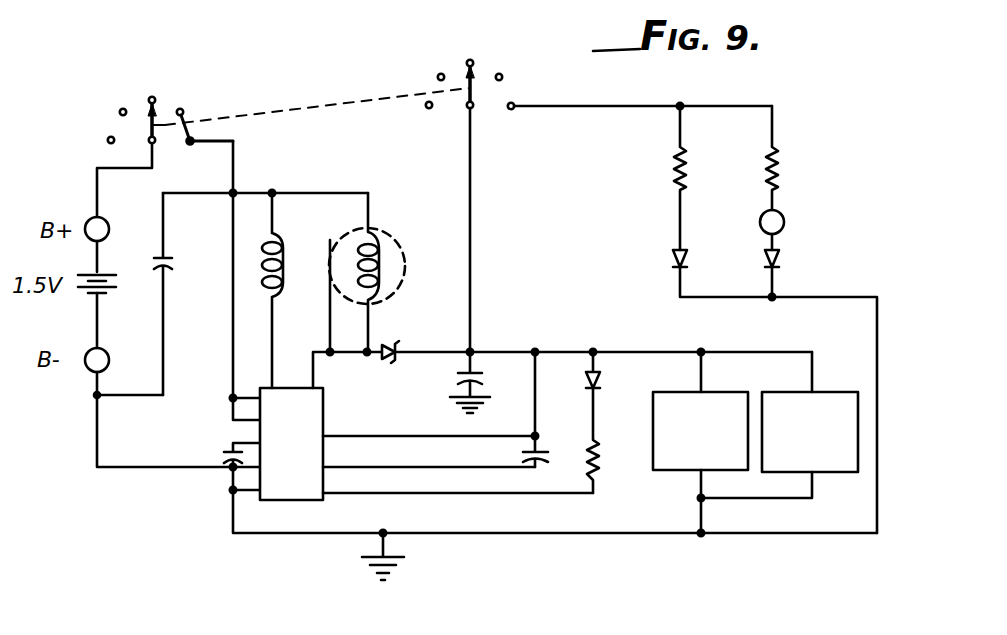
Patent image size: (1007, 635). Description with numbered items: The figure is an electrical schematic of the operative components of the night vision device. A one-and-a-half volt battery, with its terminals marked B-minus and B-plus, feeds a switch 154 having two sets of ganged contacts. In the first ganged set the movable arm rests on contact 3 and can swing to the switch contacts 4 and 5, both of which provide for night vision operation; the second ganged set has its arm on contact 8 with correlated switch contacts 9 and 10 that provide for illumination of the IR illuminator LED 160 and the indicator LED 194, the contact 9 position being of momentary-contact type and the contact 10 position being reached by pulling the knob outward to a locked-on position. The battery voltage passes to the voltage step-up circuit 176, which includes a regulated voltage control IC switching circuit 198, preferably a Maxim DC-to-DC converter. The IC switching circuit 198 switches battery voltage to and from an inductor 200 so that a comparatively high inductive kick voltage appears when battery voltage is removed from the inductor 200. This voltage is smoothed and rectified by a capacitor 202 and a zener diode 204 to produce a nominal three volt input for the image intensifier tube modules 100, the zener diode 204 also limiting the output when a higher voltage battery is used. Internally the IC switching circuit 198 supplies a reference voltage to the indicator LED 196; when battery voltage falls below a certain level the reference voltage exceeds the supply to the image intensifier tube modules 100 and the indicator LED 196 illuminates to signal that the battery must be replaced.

The switch 154 is at (196, 93).
The switch terminal 3 is at (167, 100).
The switch contact 4 is at (195, 112).
The switch contact 5 is at (199, 156).
The switch terminal 8 is at (483, 62).
The switch contact 9 is at (513, 75).
The switch contact 10 is at (516, 124).
The voltage step-up circuit 176 is at (183, 488).
The regulated voltage control IC switching circuit 198 is at (326, 420).
The inductor 200 is at (288, 230).
The capacitor 202 is at (460, 379).
The zener diode 204 is at (390, 342).
The indicator LED 196 is at (602, 380).
The image intensifier tube modules 100 is at (820, 380).
The IR illuminator LED 160 is at (673, 258).
The indicator LED 194 is at (779, 259).